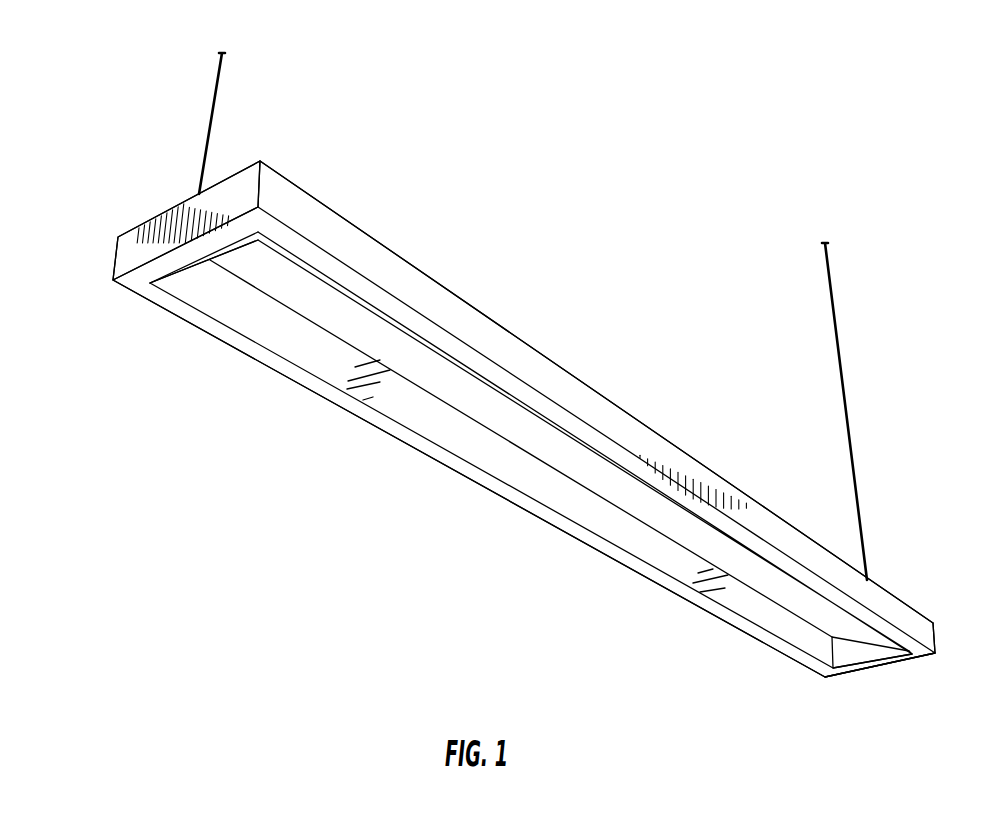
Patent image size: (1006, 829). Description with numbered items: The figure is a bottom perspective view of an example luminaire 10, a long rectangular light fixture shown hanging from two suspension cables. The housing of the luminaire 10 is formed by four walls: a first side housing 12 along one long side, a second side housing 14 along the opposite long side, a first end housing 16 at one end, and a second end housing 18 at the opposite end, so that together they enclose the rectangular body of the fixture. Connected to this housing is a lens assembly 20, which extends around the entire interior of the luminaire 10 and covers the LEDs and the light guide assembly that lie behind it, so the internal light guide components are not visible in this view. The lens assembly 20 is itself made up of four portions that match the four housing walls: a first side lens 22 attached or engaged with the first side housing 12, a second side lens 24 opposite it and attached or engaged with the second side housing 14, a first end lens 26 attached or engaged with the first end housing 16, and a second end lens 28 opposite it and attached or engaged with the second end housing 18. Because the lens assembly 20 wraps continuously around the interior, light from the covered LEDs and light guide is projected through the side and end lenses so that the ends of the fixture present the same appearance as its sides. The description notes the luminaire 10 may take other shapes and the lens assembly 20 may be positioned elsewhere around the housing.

The luminaire 10 is at (147, 110).
The first side housing 12 is at (413, 282).
The second side housing 14 is at (357, 410).
The first end housing 16 is at (905, 656).
The second end housing 18 is at (147, 242).
The lens assembly 20 is at (592, 523).
The first side lens 22 is at (495, 388).
The second side lens 24 is at (440, 428).
The first end lens 26 is at (850, 658).
The second end lens 28 is at (227, 252).